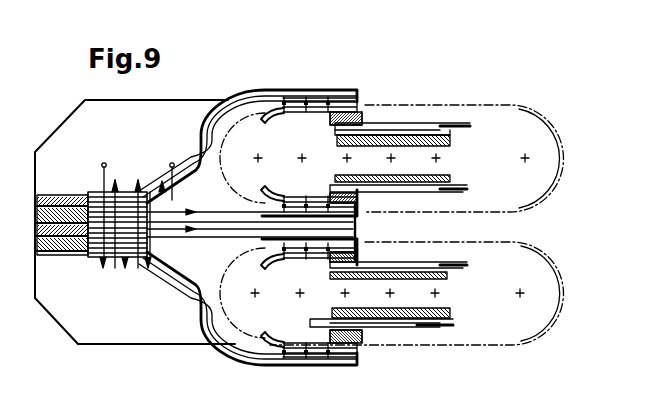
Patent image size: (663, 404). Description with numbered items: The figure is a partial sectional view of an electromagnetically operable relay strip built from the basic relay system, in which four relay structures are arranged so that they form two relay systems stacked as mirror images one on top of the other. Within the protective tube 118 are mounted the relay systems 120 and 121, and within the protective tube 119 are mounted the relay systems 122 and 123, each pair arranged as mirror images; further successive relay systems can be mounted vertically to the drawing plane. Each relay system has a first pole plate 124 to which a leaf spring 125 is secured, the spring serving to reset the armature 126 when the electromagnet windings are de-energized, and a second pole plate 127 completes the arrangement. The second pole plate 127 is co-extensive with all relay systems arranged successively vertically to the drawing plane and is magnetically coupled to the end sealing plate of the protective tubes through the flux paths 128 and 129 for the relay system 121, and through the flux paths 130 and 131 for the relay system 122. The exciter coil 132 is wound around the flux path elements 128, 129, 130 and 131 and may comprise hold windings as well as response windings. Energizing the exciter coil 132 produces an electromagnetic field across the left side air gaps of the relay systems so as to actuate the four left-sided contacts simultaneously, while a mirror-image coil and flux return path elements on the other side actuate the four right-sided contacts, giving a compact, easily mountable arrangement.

The protective tube 118 is at (493, 127).
The protective tube 119 is at (527, 255).
The relay system 120 is at (443, 125).
The relay system 121 is at (455, 178).
The relay system 122 is at (440, 254).
The relay system 123 is at (453, 313).
The first pole plate 124 is at (457, 146).
The leaf spring 125 is at (400, 321).
The armature 126 is at (393, 133).
The second pole plate 127 is at (268, 91).
The flux path 128 is at (213, 133).
The flux path 129 is at (207, 212).
The flux path 130 is at (213, 237).
The flux path 131 is at (203, 313).
The exciter coil 132 is at (102, 185).